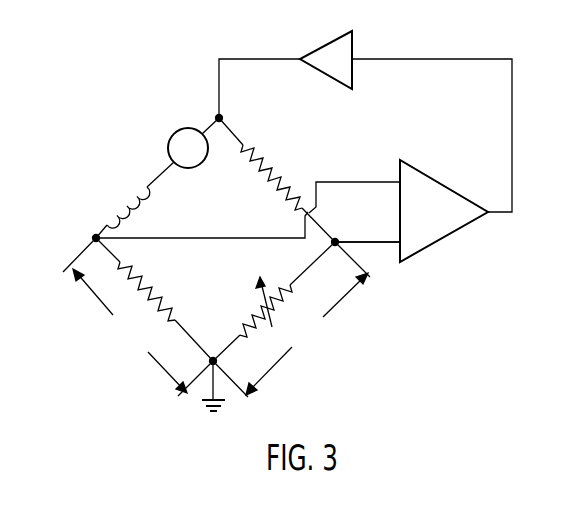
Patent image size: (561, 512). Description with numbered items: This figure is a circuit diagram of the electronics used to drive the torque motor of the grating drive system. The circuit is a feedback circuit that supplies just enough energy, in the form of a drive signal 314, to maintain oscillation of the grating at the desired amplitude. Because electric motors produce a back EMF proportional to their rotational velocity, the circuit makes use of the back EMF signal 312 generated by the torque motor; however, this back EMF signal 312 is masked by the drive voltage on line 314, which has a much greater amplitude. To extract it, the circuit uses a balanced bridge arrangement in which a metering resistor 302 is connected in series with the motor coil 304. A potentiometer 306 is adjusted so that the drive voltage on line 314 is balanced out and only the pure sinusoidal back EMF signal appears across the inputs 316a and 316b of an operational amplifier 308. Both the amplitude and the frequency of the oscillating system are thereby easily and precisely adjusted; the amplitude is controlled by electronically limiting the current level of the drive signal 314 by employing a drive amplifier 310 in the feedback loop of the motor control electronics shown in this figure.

The metering resistor 302 is at (152, 293).
The motor coil 304 is at (118, 200).
The potentiometer 306 is at (290, 313).
The operational amplifier 308 is at (460, 228).
The drive amplifier 310 is at (355, 43).
The back EMF signal 312 is at (176, 130).
The drive signal 314 is at (216, 214).
The input of operational amplifier 316a is at (398, 178).
The input of operational amplifier 316b is at (400, 250).